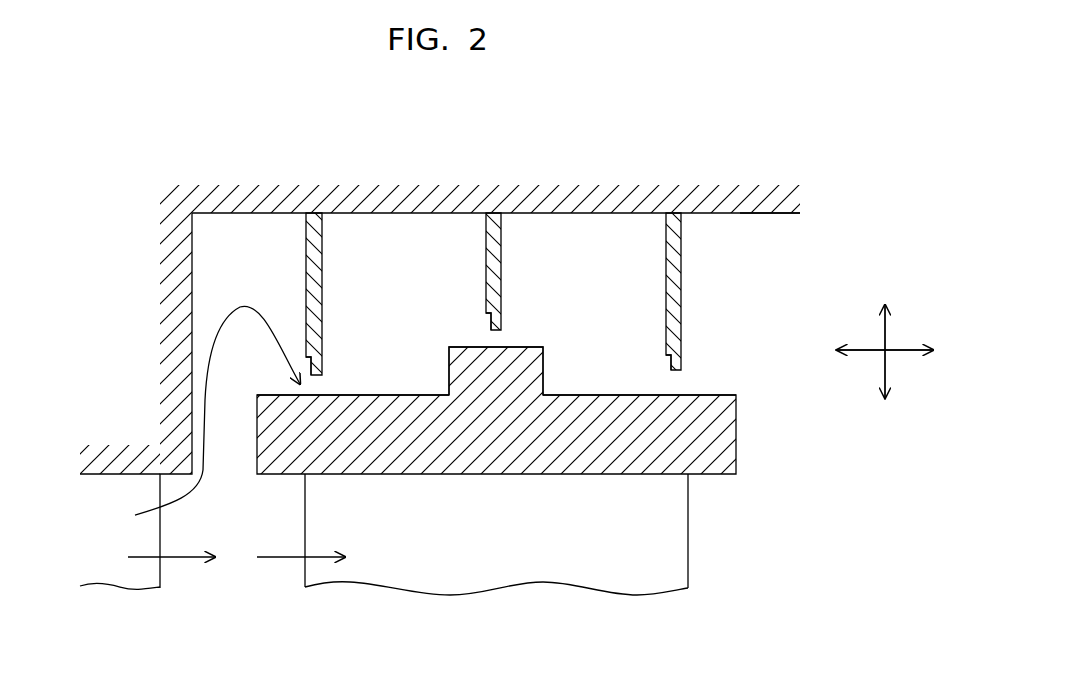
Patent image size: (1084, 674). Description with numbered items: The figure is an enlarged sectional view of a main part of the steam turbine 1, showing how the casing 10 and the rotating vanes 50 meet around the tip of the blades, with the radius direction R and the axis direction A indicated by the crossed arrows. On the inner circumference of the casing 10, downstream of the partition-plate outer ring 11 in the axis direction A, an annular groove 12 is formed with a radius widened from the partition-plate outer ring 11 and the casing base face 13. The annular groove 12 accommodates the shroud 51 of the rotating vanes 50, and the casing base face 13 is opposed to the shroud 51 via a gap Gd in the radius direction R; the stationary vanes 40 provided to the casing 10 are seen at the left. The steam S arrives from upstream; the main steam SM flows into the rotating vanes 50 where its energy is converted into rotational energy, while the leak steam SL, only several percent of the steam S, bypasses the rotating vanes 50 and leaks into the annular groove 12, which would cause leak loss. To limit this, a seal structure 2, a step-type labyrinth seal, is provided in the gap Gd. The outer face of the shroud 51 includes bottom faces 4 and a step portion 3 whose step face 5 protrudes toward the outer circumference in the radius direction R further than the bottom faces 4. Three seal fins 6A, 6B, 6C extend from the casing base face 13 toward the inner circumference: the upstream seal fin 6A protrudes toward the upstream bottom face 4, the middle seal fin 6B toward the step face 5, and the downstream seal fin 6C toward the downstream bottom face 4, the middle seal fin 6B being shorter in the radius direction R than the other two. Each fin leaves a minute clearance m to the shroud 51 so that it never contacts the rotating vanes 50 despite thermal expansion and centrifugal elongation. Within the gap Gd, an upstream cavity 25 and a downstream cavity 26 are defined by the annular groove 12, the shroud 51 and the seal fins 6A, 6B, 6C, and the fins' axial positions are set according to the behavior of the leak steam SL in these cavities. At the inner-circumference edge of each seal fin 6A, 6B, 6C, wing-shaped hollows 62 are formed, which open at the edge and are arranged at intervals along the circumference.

The steam turbine 1 is at (710, 128).
The seal structure 2 is at (220, 295).
The step portion 3 is at (545, 358).
The bottom faces 4 is at (402, 395).
The step face 5 is at (522, 347).
The upstream seal fin 6A is at (323, 291).
The middle seal fin 6B is at (502, 272).
The downstream seal fin 6C is at (666, 238).
The casing 10 is at (220, 176).
The partition-plate outer ring 11 is at (94, 466).
The annular groove 12 is at (243, 470).
The casing base face 13 is at (766, 214).
The upstream cavity 25 is at (451, 238).
The downstream cavity 26 is at (538, 238).
The stationary vanes 40 is at (98, 585).
The rotating vanes 50 is at (688, 565).
The shroud 51 is at (710, 465).
The wing-shaped hollows 62 is at (306, 372).
The gap Gd is at (421, 268).
The leak steam SL is at (251, 308).
The minute clearance m is at (321, 386).
The steam S is at (185, 560).
The main steam SM is at (273, 560).
The radius direction R is at (885, 337).
The axis direction A is at (872, 352).